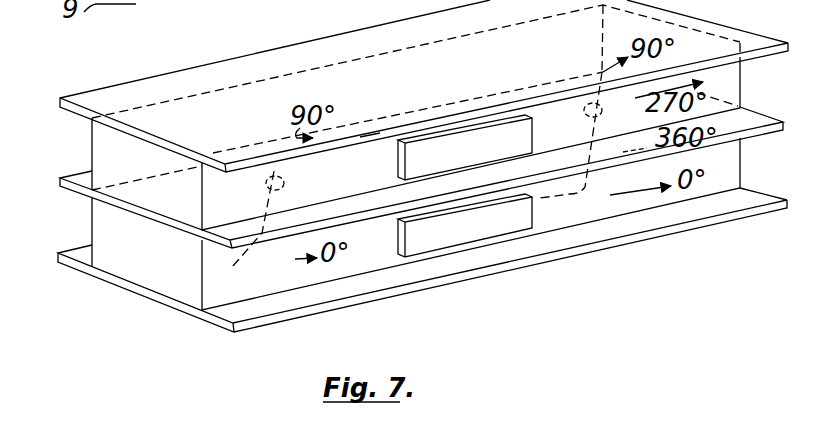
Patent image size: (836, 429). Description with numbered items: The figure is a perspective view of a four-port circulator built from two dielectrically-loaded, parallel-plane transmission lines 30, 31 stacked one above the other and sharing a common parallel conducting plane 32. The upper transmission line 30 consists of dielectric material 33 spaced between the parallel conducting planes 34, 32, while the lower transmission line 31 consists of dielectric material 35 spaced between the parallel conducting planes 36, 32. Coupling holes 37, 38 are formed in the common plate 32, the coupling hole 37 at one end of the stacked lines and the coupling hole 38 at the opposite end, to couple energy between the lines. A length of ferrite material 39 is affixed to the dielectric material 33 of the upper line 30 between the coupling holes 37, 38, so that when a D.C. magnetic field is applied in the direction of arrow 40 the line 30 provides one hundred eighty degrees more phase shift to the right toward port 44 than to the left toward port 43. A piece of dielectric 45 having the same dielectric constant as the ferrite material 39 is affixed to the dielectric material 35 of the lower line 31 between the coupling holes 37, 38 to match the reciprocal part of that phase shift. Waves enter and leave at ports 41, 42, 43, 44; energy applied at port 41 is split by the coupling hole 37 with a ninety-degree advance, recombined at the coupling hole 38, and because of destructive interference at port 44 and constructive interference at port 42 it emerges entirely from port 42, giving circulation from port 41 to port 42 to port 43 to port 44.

The upper transmission line 30 is at (244, 208).
The lower transmission line 31 is at (416, 224).
The common parallel conducting plane 32 is at (76, 175).
The dielectric material 33 is at (370, 137).
The parallel conducting plane 34 is at (98, 97).
The dielectric material 35 is at (378, 255).
The parallel conducting plane 36 is at (76, 257).
The coupling hole 37 is at (285, 181).
The coupling hole 38 is at (604, 103).
The ferrite material 39 is at (413, 162).
The arrow 40 is at (463, 94).
The port 41 is at (82, 236).
The port 42 is at (784, 173).
The port 43 is at (85, 150).
The port 44 is at (788, 97).
The piece of dielectric 45 is at (415, 237).